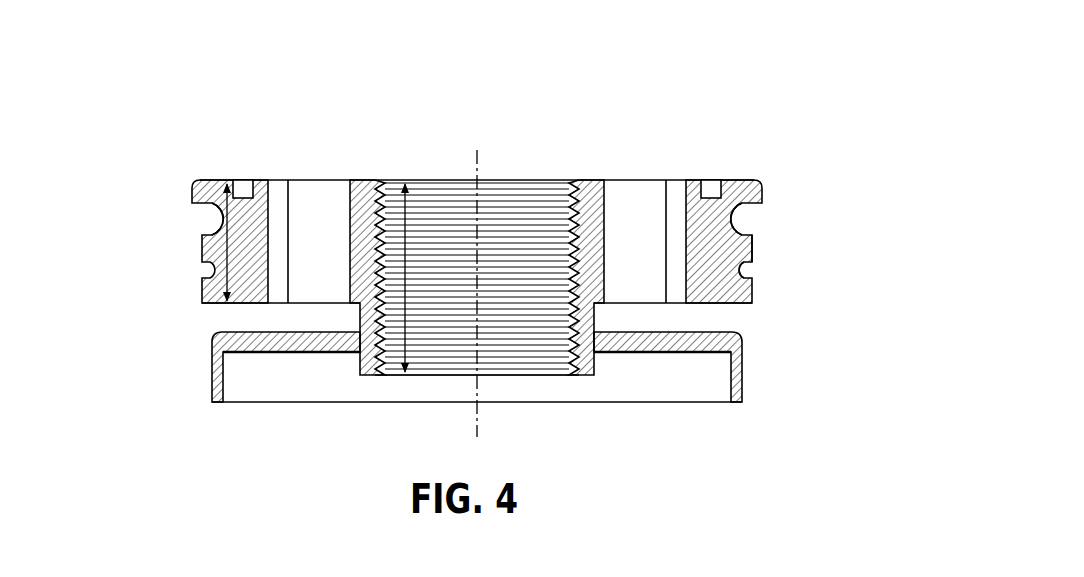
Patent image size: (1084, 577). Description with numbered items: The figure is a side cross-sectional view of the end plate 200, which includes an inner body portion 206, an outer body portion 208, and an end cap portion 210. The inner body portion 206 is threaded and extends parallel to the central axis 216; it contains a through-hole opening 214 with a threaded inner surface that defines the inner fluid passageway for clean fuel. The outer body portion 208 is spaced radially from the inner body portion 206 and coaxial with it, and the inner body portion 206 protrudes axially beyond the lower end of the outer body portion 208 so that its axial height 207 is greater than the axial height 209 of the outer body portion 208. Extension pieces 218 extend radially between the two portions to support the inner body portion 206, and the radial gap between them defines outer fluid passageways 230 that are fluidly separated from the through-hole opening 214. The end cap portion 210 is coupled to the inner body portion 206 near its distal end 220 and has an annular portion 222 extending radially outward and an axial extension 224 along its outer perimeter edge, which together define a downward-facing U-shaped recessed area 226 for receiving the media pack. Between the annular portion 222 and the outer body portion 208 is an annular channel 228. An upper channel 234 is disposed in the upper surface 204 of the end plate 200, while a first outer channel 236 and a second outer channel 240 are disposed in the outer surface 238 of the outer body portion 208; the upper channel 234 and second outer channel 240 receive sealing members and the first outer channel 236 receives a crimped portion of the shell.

The end plate 200 is at (790, 123).
The upper surface 204 is at (696, 180).
The inner body portion 206 is at (594, 189).
The axial height 207 is at (403, 255).
The outer body portion 208 is at (719, 263).
The axial height 209 is at (227, 243).
The end cap portion 210 is at (749, 374).
The through-hole opening 214 is at (579, 380).
The central axis 216 is at (477, 152).
The extension pieces 218 is at (308, 293).
The distal end 220 is at (360, 404).
The annular portion 222 is at (310, 347).
The axial extension 224 is at (210, 382).
The recessed area 226 is at (701, 405).
The annular channel 228 is at (731, 318).
The outer fluid passageways 230 is at (647, 188).
The upper channel 234 is at (709, 191).
The first outer channel 236 is at (745, 214).
The outer surface 238 is at (759, 238).
The second outer channel 240 is at (746, 283).